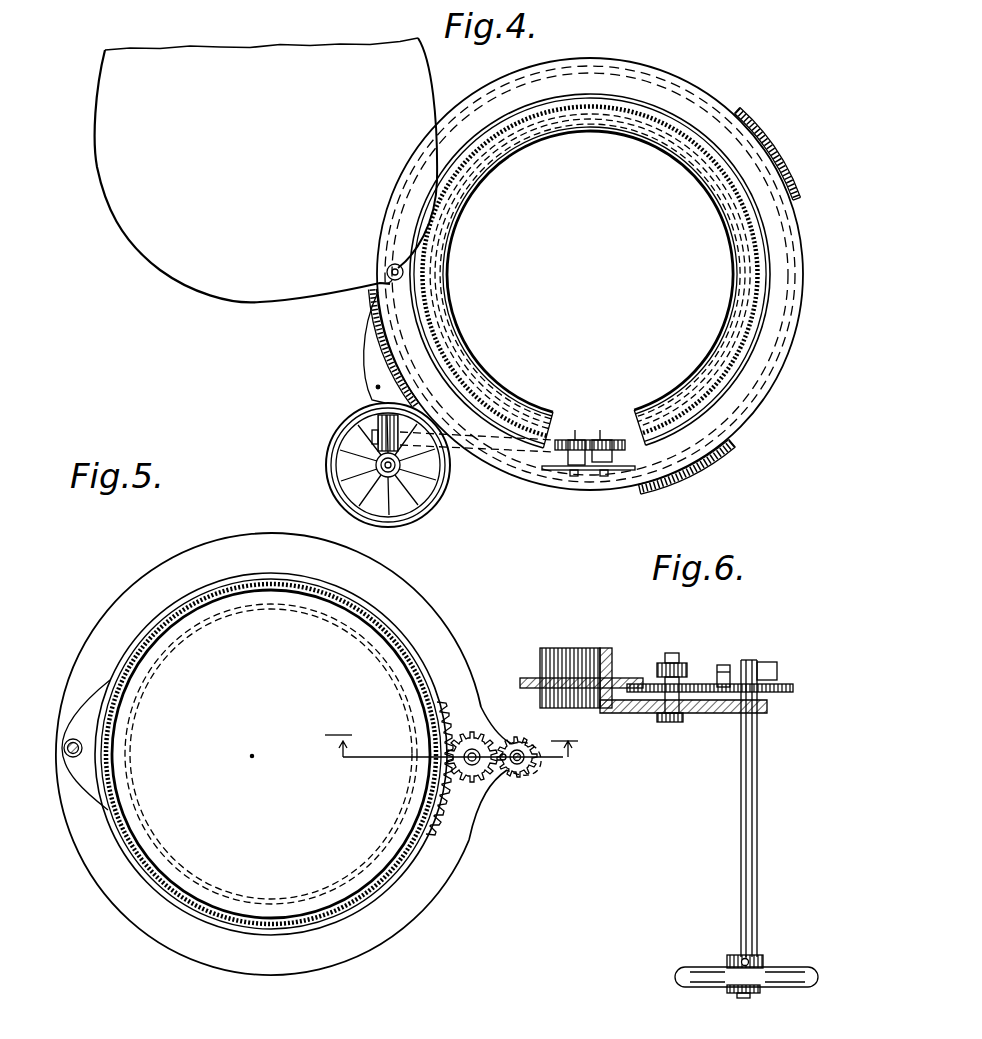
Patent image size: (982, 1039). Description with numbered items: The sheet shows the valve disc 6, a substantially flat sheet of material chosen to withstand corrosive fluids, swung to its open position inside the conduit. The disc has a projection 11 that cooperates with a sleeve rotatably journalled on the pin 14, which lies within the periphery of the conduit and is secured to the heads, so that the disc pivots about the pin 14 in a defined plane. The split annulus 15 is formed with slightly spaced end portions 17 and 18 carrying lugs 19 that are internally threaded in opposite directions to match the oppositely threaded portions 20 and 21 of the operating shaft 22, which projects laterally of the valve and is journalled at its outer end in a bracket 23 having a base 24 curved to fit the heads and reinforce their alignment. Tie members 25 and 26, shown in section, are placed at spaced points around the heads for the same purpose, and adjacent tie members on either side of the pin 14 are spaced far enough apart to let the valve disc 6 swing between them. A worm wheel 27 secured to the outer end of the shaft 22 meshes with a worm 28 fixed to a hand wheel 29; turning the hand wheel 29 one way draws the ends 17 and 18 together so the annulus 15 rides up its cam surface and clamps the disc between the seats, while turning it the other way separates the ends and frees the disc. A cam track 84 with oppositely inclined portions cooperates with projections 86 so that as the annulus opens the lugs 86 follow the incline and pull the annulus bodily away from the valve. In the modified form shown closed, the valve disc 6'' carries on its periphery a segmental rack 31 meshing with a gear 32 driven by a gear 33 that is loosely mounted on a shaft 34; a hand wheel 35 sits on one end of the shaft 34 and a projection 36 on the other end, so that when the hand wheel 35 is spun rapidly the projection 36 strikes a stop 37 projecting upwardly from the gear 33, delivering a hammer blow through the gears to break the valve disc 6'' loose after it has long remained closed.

In FIG. 4, the valve disc 6 is at (266, 170).
In FIG. 5, the valve disc 6'' is at (298, 754).
In FIG. 4, the projection 11 is at (382, 288).
In FIG. 4, the pin 14 is at (386, 268).
In FIG. 4, the annulus 15 is at (437, 320).
In FIG. 4, the end portion of annulus 17 is at (563, 440).
In FIG. 4, the end portion of annulus 18 is at (608, 440).
In FIG. 4, the lugs 19 is at (578, 466).
In FIG. 4, the threaded portion 20 is at (604, 462).
In FIG. 4, the threaded portion 21 is at (562, 470).
In FIG. 4, the operating shaft 22 is at (512, 450).
In FIG. 4, the bracket 23 is at (376, 388).
In FIG. 4, the base 24 is at (380, 340).
In FIG. 4, the tie member 25 is at (708, 473).
In FIG. 4, the tie member 26 is at (773, 152).
In FIG. 4, the worm wheel 27 is at (376, 428).
In FIG. 4, the worm 28 is at (374, 467).
In FIG. 4, the hand wheel 29 is at (410, 526).
In FIG. 5, the segmental rack 31 is at (455, 800).
In FIG. 5, the gear 32 is at (478, 735).
In FIG. 6, the gear 32 is at (643, 684).
In FIG. 5, the gear 33 is at (533, 767).
In FIG. 6, the gear 33 is at (790, 692).
In FIG. 5, the shaft 34 is at (580, 757).
In FIG. 6, the shaft 34 is at (745, 760).
In FIG. 6, the hand wheel 35 is at (702, 975).
In FIG. 5, the projection 36 is at (523, 783).
In FIG. 6, the projection 36 is at (770, 672).
In FIG. 5, the stop 37 is at (501, 772).
In FIG. 6, the stop 37 is at (722, 665).
In FIG. 4, the cam track 84 is at (573, 477).
In FIG. 4, the projections 86 is at (603, 477).